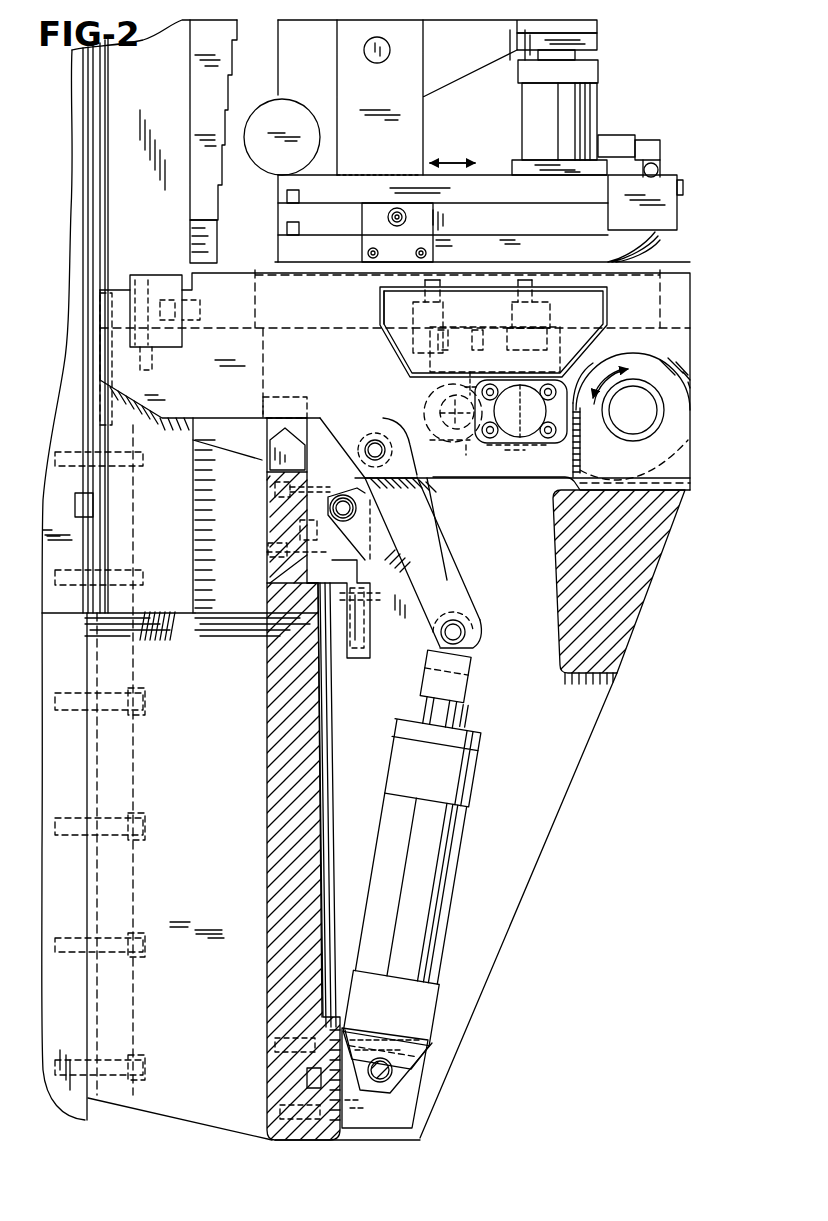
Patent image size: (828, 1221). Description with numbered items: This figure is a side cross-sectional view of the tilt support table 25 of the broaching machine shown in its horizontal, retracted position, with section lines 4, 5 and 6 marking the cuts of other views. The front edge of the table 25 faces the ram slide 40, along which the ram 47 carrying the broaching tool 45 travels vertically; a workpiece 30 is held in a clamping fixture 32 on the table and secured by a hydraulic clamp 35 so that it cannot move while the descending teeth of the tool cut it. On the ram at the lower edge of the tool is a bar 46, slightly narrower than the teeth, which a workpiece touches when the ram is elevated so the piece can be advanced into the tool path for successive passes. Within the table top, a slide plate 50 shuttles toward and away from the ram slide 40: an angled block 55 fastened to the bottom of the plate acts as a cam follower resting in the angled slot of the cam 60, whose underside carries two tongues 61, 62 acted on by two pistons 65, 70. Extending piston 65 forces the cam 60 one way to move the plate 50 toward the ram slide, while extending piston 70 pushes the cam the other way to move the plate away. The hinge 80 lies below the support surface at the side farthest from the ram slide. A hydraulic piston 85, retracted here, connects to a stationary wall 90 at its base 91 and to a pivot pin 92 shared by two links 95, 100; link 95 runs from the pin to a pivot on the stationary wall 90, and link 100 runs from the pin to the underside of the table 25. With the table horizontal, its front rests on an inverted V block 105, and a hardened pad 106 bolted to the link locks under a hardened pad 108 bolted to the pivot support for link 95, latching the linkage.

The section line 4- 4 is at (105, 265).
The section line 5- 5 is at (110, 328).
The section line 6- 6 is at (75, 375).
The tilt support table 25 is at (320, 373).
The workpiece 30 is at (262, 98).
The clamping fixture 32 is at (606, 31).
The hydraulic clamp 35 is at (533, 104).
The ram slide 40 is at (52, 558).
The broaching tool 45 is at (200, 80).
The bar 46 is at (190, 240).
The ram 47 is at (195, 527).
The slide plate 50 is at (660, 258).
The angled block 55 is at (546, 315).
The cam 60 is at (427, 354).
The tongue 61 is at (463, 456).
The tongue 62 is at (505, 456).
The piston 65 is at (426, 406).
The piston 70 is at (521, 427).
The hinge 80 is at (673, 436).
The hydraulic piston 85 is at (440, 852).
The stationary wall 90 is at (270, 742).
The base 91 is at (410, 1100).
The pivot pin 92 is at (462, 626).
The link 95 is at (420, 582).
The link 100 is at (413, 524).
The inverted V block 105 is at (272, 444).
The hardened pad 106 is at (347, 610).
The hardened pad 108 is at (268, 617).